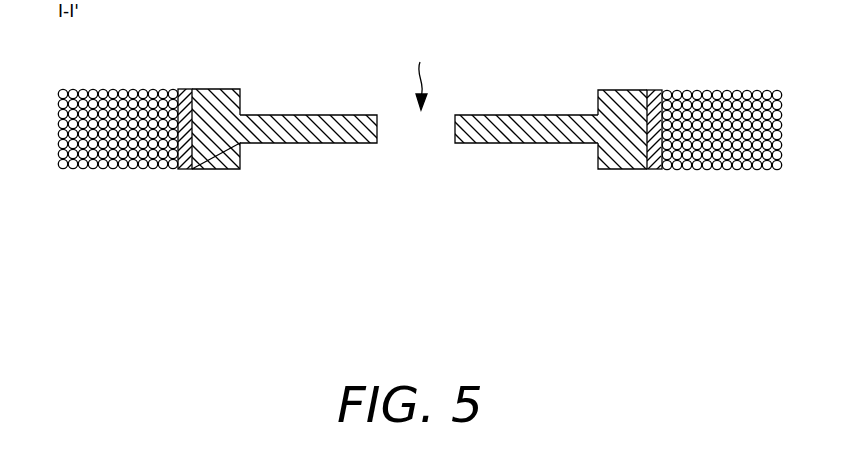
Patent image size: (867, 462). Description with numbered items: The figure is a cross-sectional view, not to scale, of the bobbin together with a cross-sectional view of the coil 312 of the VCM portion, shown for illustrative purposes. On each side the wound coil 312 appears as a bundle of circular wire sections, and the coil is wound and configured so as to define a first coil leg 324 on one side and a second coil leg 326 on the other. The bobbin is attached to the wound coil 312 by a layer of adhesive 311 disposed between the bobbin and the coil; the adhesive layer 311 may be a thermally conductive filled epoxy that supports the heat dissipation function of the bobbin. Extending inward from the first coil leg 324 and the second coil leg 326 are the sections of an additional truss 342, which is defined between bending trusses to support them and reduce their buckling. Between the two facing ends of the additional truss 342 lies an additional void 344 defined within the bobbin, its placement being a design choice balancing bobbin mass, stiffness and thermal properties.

The adhesive layer 311 is at (183, 88).
The coil 312 is at (110, 168).
The first coil leg 324 is at (235, 90).
The second coil leg 326 is at (607, 90).
The additional truss 342 is at (338, 143).
The additional void 344 is at (417, 75).